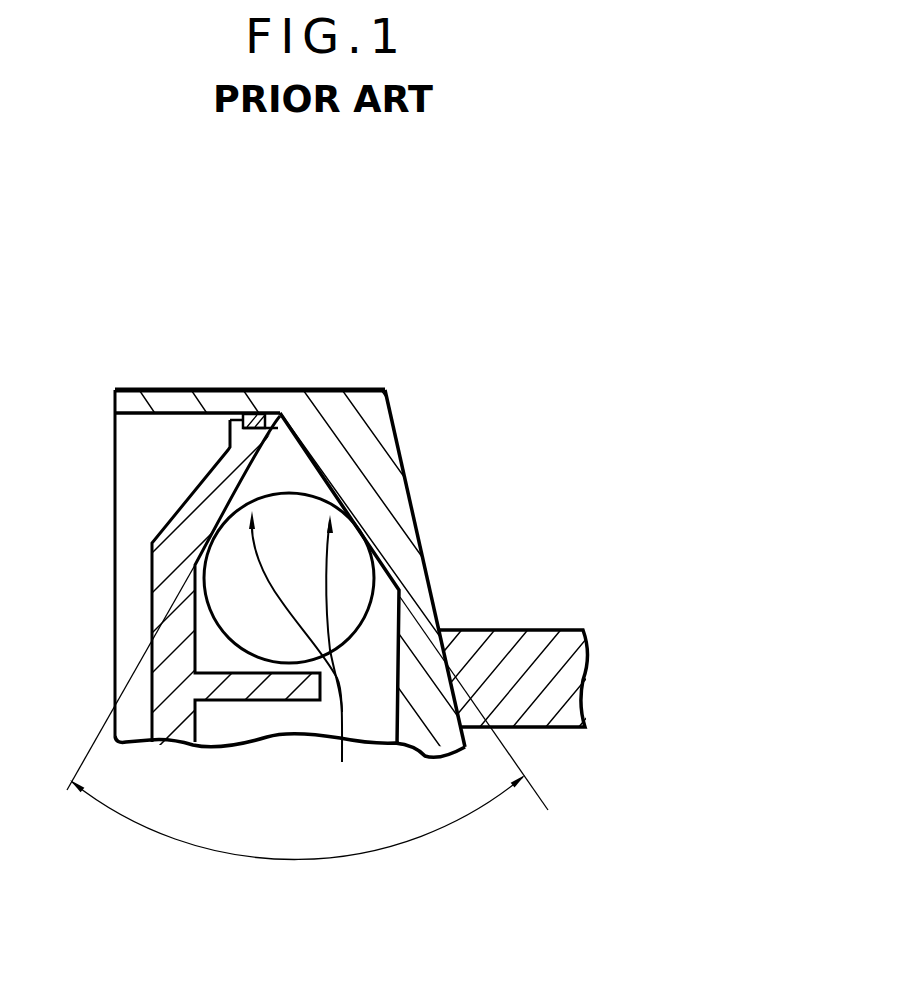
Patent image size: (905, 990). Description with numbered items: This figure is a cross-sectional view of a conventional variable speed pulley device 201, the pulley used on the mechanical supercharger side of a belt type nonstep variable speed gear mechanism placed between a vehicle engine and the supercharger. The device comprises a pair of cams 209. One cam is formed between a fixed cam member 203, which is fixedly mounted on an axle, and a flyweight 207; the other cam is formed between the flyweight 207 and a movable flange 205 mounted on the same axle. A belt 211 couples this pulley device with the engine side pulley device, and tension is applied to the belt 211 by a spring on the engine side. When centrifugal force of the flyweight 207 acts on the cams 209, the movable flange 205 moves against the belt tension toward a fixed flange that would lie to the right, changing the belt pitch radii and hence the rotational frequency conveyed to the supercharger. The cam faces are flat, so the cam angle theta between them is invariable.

The variable speed pulley device 201 is at (390, 377).
The fixed cam member 203 is at (167, 523).
The movable flange 205 is at (408, 459).
The flyweight 207 is at (347, 550).
The cams 209 is at (311, 657).
The belt 211 is at (520, 642).